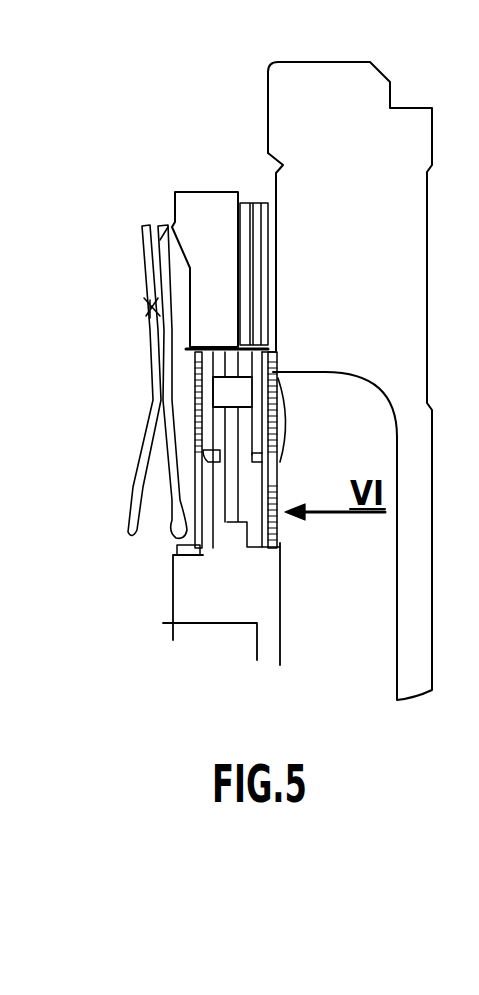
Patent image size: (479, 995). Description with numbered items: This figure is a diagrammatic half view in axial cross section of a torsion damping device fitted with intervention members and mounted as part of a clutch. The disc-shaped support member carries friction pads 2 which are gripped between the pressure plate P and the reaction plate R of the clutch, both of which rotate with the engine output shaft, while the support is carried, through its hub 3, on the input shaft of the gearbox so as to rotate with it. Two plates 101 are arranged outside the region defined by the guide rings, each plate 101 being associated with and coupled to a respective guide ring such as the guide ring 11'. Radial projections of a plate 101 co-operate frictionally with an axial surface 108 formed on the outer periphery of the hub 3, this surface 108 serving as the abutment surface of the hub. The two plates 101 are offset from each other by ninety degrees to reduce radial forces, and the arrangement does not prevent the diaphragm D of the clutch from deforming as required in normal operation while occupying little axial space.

The reaction plate R is at (268, 128).
The pressure plate P is at (214, 192).
The diaphragm D is at (145, 268).
The friction pads 2 is at (240, 202).
The guide ring 11' is at (302, 316).
The plate 101 is at (187, 433).
The axial surface 108 is at (176, 540).
The hub 3 is at (282, 593).